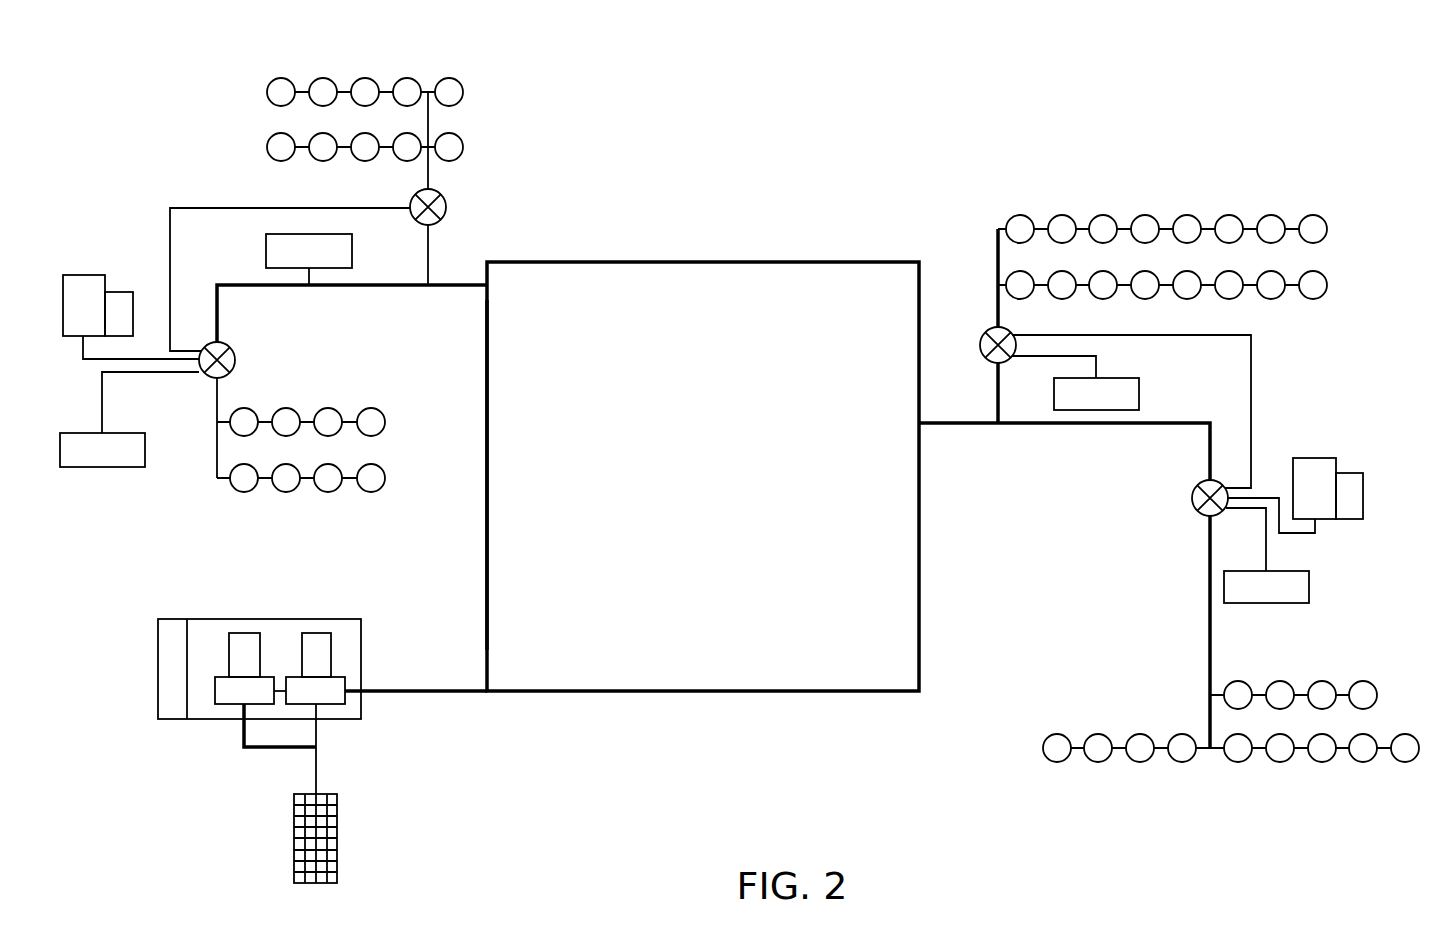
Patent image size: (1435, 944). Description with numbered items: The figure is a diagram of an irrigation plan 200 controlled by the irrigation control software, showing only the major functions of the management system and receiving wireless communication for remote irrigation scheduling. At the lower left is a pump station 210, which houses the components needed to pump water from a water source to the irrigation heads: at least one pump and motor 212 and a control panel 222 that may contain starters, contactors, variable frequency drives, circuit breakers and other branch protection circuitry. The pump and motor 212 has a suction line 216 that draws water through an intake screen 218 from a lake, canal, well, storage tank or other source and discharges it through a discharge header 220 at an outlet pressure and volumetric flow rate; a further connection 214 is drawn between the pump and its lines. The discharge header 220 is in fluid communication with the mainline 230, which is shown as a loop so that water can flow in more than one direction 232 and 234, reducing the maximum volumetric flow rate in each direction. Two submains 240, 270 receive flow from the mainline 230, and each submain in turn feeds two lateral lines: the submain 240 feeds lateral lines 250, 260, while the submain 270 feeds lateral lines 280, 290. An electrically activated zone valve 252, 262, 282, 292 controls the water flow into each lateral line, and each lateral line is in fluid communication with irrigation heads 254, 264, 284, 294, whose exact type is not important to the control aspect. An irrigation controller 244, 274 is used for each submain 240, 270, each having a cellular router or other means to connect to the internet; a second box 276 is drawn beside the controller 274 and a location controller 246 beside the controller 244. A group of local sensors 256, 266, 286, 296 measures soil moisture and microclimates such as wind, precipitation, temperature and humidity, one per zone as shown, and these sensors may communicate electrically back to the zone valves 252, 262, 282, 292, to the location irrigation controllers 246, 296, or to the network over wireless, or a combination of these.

The irrigation plan 200 is at (1203, 108).
The pump station 210 is at (361, 650).
The pump and motor 212 is at (245, 633).
The fuel line 214 is at (243, 736).
The suction line 216 is at (316, 768).
The intake screen 218 is at (337, 836).
The discharge header 220 is at (318, 633).
The control panel 222 is at (168, 670).
The mainline 230 is at (617, 706).
The first flow direction 232 is at (714, 691).
The second flow direction 234 is at (487, 475).
The submain 240 is at (970, 425).
The irrigation controller 244 is at (1313, 458).
The location irrigation controller 246 is at (1350, 473).
The lateral line 250 is at (1208, 635).
The zone valve 252 is at (1191, 498).
The irrigation heads 254 is at (1280, 762).
The local sensor 256 is at (1309, 590).
The lateral line 260 is at (998, 250).
The zone valve 262 is at (992, 330).
The irrigation heads 264 is at (1147, 215).
The local sensor 266 is at (1139, 395).
The submain 270 is at (441, 287).
The irrigation controller 274 is at (83, 275).
The power supply 276 is at (119, 292).
The lateral line 280 is at (217, 450).
The zone valve 282 is at (235, 360).
The irrigation heads 284 is at (286, 492).
The local sensor 286 is at (101, 467).
The lateral line 290 is at (428, 118).
The zone valve 292 is at (446, 207).
The irrigation heads 294 is at (323, 78).
The local sensor 296 is at (266, 250).